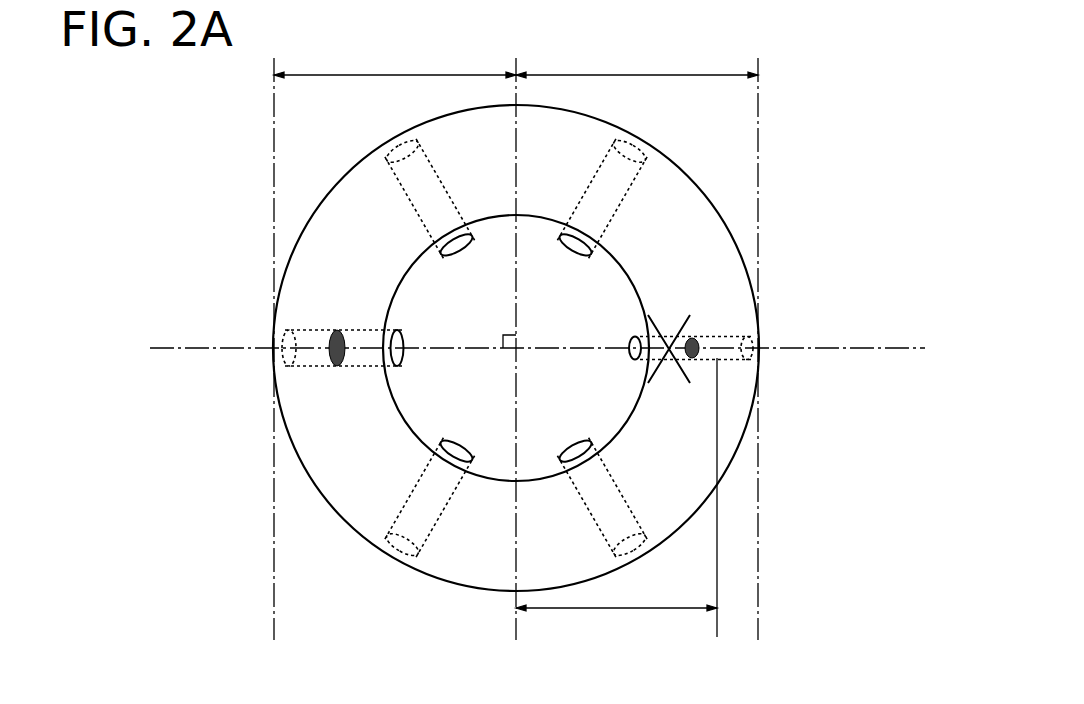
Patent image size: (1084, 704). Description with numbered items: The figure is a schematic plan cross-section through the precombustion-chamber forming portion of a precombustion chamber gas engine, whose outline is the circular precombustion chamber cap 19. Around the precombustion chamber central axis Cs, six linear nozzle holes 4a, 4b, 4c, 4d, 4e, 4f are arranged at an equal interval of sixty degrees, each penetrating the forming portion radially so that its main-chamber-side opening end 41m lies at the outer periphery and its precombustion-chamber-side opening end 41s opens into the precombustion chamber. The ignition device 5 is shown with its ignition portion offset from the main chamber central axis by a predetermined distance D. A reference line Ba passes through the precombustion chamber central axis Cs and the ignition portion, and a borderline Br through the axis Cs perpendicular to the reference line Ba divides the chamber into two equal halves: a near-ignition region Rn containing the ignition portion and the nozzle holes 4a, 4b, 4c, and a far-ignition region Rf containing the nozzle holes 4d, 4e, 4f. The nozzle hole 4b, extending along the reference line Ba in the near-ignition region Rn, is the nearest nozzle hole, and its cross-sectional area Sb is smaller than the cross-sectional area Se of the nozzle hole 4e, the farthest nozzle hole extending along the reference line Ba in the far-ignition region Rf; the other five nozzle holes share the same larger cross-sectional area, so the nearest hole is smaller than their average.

The precombustion chamber cap 19 is at (823, 80).
The nozzle hole 4a is at (632, 182).
The nozzle hole 4b is at (737, 338).
The nozzle hole 4c is at (628, 504).
The nozzle hole 4d is at (427, 535).
The nozzle hole 4e is at (305, 330).
The nozzle hole 4f is at (400, 184).
The ignition device 5 is at (688, 316).
The main-chamber-side opening end 41m is at (415, 139).
The precombustion-chamber-side opening end 41s is at (473, 248).
The precombustion chamber central axis Cs is at (516, 348).
The cross-sectional area of nozzle hole 4e Se is at (328, 357).
The cross-sectional area of nozzle hole 4b Sb is at (692, 358).
The borderline Br is at (517, 70).
The reference line Ba is at (870, 348).
The far-ignition region Rf is at (395, 64).
The near-ignition region Rn is at (637, 64).
The predetermined distance D is at (616, 619).